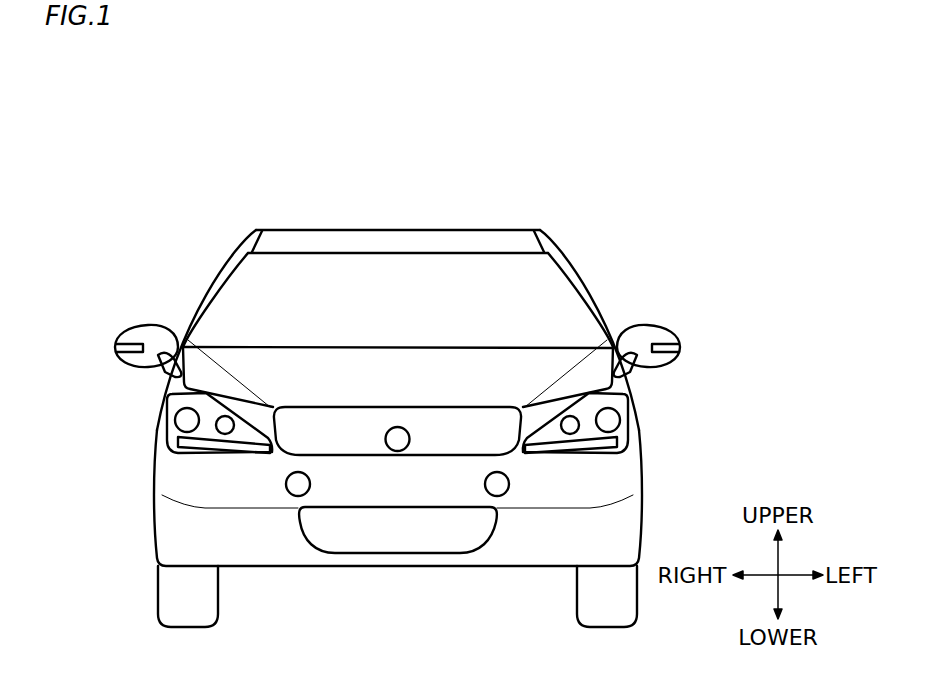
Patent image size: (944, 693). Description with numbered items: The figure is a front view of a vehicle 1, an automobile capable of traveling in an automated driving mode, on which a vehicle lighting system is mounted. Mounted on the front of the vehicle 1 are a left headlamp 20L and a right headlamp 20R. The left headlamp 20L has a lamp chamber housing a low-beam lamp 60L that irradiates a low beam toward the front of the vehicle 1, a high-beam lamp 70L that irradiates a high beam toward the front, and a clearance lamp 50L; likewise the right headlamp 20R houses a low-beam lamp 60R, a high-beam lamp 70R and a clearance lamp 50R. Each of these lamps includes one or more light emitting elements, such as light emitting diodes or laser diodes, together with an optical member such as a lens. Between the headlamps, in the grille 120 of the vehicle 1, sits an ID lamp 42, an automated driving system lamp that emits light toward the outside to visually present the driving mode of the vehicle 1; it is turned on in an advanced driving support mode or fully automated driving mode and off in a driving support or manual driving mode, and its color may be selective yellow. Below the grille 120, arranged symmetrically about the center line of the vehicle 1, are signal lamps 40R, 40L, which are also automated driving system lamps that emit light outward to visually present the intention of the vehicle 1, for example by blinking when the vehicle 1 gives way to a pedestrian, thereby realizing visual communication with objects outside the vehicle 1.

The vehicle 1 is at (256, 204).
The grille 120 is at (470, 417).
The ID lamp 42 is at (397, 443).
The signal lamp 40R is at (296, 485).
The signal lamp 40L is at (499, 485).
The right headlamp 20R is at (170, 433).
The left headlamp 20L is at (625, 433).
The low-beam lamp 60R is at (183, 418).
The low-beam lamp 60L is at (612, 418).
The high-beam lamp 70R is at (225, 428).
The high-beam lamp 70L is at (570, 428).
The clearance lamp 50R is at (212, 447).
The clearance lamp 50L is at (583, 447).